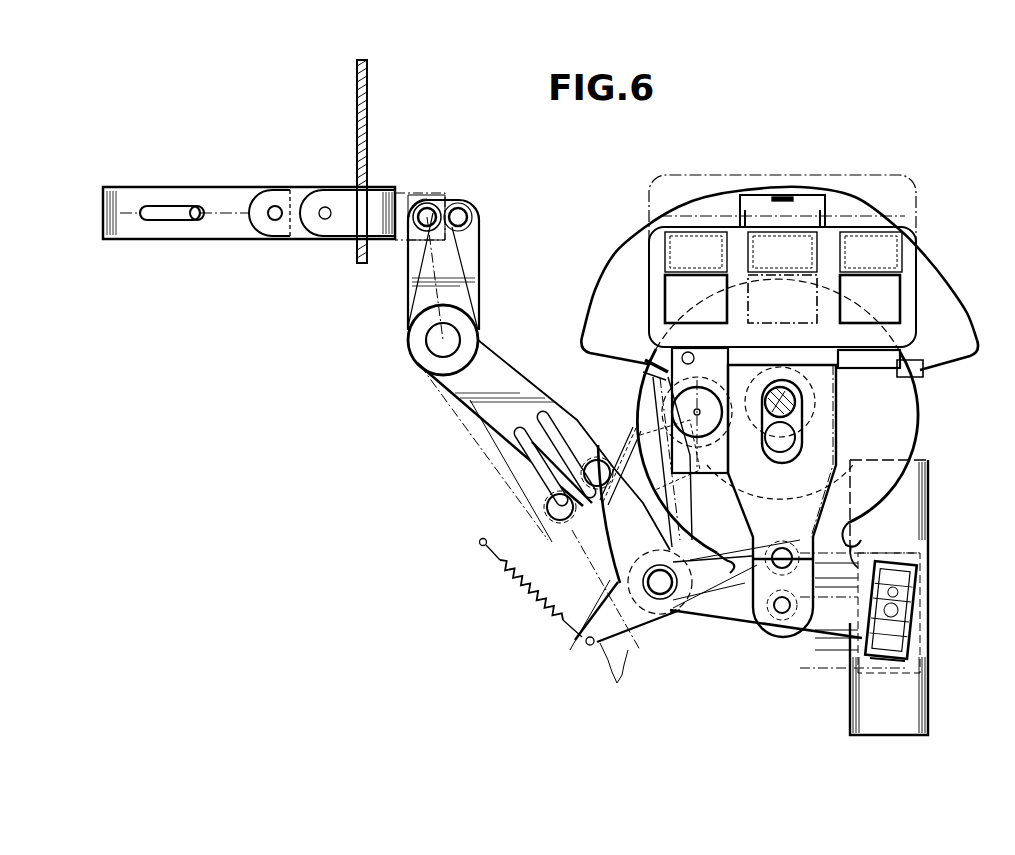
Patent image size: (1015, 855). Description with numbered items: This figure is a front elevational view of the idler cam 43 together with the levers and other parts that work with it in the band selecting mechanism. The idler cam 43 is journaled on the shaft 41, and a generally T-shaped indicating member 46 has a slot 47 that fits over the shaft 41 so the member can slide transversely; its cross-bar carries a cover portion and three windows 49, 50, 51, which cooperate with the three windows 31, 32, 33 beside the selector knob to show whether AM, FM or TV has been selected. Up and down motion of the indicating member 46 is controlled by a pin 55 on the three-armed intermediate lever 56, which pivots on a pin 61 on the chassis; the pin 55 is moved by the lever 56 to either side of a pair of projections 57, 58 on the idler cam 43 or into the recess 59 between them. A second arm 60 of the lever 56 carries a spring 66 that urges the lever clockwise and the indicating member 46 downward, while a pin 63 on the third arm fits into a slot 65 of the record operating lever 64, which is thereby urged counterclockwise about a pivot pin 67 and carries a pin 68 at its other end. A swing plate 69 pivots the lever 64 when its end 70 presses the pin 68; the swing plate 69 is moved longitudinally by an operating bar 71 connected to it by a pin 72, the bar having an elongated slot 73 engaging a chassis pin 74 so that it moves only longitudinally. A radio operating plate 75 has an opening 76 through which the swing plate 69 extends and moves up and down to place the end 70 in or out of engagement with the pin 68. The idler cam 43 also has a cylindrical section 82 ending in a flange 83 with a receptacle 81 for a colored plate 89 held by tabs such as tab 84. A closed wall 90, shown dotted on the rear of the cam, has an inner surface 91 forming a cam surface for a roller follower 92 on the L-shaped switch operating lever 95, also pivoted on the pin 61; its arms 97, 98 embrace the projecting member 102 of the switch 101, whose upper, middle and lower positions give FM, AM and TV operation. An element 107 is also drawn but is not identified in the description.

The window 31 is at (698, 232).
The window 32 is at (812, 245).
The window 33 is at (878, 235).
The shaft 41 is at (800, 392).
The idler cam 43 is at (937, 410).
The indicating member 46 is at (912, 270).
The slot 47 is at (795, 433).
The window 49 is at (670, 304).
The window 50 is at (812, 300).
The window 51 is at (895, 304).
The pin 55 is at (781, 615).
The intermediate lever 56 is at (724, 614).
The projection 57 is at (716, 545).
The projection 58 is at (862, 553).
The recess 59 is at (788, 548).
The second arm 60 is at (580, 655).
The pin 61 is at (663, 600).
The pin 63 is at (572, 530).
The record operating lever 64 is at (495, 382).
The slot 65 is at (555, 455).
The spring 66 is at (512, 580).
The pivot pin 67 is at (460, 340).
The pin 68 is at (450, 205).
The swing plate 69 is at (420, 214).
The end 70 is at (410, 240).
The operating bar 71 is at (173, 230).
The pin 72 is at (275, 206).
The elongated slot 73 is at (158, 212).
The pin 74 is at (197, 206).
The radio operating plate 75 is at (367, 122).
The opening 76 is at (355, 243).
The receptacle 81 is at (826, 187).
The cylindrical section 82 is at (895, 368).
The flange 83 is at (958, 300).
The tab 84 is at (782, 195).
The colored plate 89 is at (768, 200).
The closed wall 90 is at (660, 406).
The inner surface 91 is at (655, 375).
The roller follower 92 is at (718, 352).
The switch operating lever 95 is at (636, 432).
The arm 97 is at (905, 578).
The arm 98 is at (905, 652).
The switch 101 is at (920, 710).
The projecting member 102 is at (866, 607).
The lever 107 is at (688, 470).